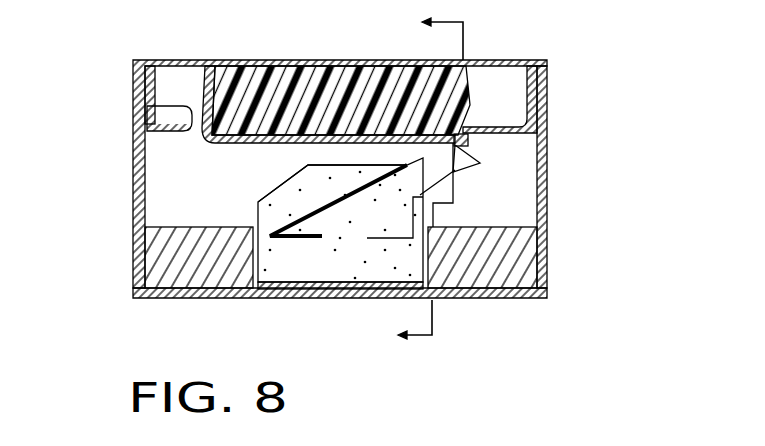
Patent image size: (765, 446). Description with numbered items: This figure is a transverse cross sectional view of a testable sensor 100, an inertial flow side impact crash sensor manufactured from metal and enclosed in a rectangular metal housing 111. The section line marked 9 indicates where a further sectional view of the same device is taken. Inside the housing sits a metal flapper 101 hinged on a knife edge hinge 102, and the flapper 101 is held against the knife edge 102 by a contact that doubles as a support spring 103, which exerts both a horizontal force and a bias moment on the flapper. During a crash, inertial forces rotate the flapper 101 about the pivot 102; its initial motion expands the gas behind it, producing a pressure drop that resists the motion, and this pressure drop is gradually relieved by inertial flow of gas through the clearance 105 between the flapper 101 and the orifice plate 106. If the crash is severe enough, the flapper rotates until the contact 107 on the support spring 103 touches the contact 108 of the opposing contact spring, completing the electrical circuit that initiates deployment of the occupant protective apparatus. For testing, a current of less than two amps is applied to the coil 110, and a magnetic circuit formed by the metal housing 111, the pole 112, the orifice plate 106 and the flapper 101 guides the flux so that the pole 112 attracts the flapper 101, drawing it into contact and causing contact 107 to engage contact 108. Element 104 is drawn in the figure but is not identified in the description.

The testable sensor 100 is at (134, 87).
The metal flapper 101 is at (470, 98).
The knife edge hinge 102 is at (466, 135).
The support spring 103 is at (480, 163).
The stepped element 104 is at (268, 200).
The clearance 105 is at (183, 105).
The orifice plate 106 is at (280, 88).
The contact 107 is at (325, 143).
The contact 108 is at (407, 165).
The coil 110 is at (526, 227).
The metal housing 111 is at (537, 258).
The pole 112 is at (258, 202).
The section line 9- 9 is at (420, 181).